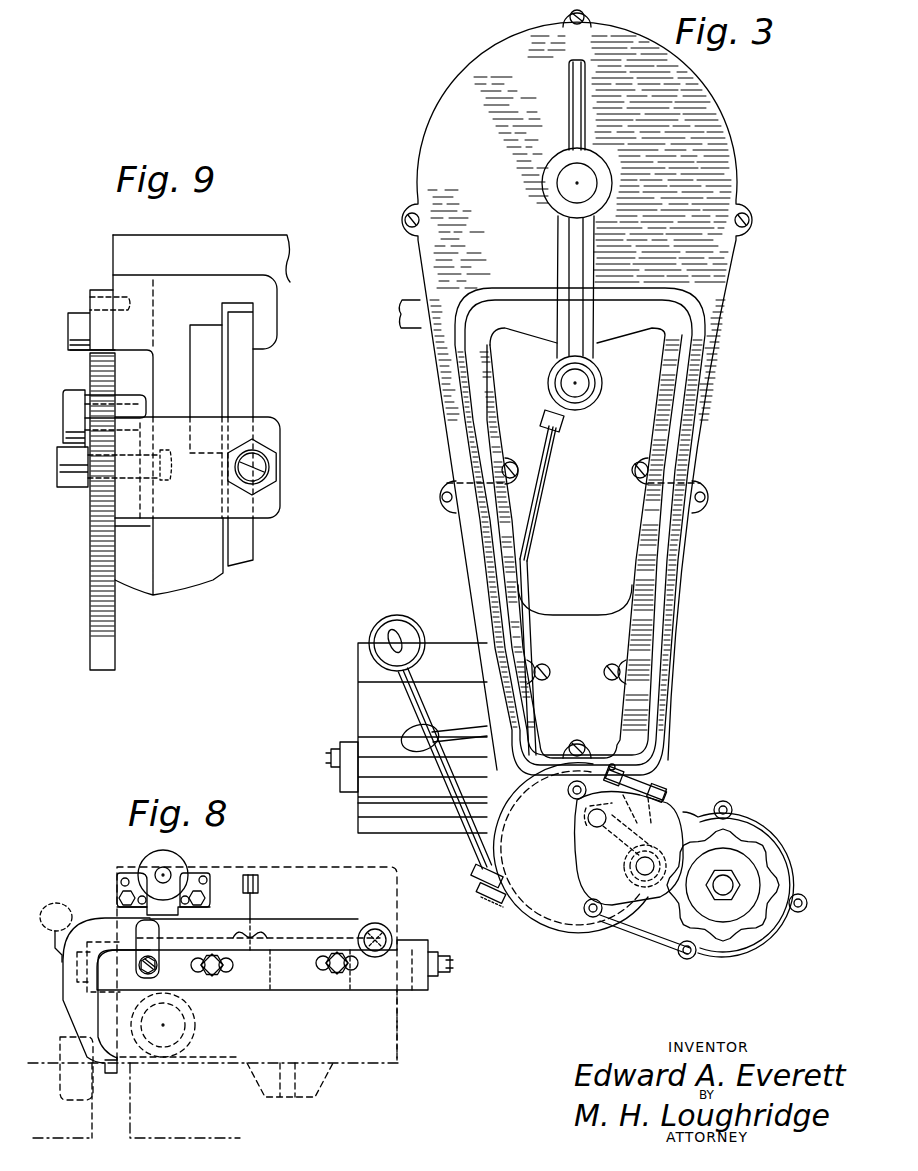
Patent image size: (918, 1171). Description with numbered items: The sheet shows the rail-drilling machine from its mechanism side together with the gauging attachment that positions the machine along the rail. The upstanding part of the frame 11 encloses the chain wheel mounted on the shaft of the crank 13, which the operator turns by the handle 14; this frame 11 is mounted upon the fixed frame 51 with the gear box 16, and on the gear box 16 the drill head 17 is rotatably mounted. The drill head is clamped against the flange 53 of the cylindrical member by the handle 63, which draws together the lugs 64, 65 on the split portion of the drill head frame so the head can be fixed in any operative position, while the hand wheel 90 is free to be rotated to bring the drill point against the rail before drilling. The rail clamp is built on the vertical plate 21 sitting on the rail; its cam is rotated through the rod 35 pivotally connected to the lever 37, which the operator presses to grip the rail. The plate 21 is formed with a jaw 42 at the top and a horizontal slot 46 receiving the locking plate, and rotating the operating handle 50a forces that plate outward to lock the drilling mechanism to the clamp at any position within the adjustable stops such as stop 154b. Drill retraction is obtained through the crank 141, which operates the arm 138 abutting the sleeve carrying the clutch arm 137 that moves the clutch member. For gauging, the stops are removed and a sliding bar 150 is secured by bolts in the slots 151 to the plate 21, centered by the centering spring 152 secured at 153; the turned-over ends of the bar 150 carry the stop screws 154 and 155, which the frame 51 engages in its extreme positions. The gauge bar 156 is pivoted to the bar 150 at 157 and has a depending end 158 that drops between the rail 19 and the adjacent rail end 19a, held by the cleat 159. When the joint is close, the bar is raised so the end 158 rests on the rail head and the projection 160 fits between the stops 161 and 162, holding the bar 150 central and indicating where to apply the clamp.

In FIG. 3, the upstanding part of the frame 11 is at (647, 140).
In FIG. 3, the crank 13 is at (558, 246).
In FIG. 3, the handle 14 is at (603, 385).
In FIG. 3, the rod 35 is at (542, 470).
In FIG. 3, the lever 37 is at (410, 322).
In FIG. 3, the vertical plate 21 is at (447, 656).
In FIG. 9, the vertical plate 21 is at (169, 556).
In FIG. 8, the vertical plate 21 is at (257, 963).
In FIG. 3, the horizontal slot 46 is at (381, 732).
In FIG. 9, the horizontal slot 46 is at (190, 350).
In FIG. 3, the operating handle 50a is at (466, 725).
In FIG. 3, the adjustable stop 154b is at (338, 757).
In FIG. 3, the flange 53 is at (362, 806).
In FIG. 3, the handle 63 is at (470, 845).
In FIG. 3, the lug 64 is at (474, 880).
In FIG. 3, the lug 65 is at (480, 898).
In FIG. 3, the gear box 16 is at (554, 931).
In FIG. 3, the clutch arm 137 is at (620, 853).
In FIG. 3, the arm 138 is at (630, 829).
In FIG. 3, the crank 141 is at (640, 780).
In FIG. 3, the hand wheel 90 is at (726, 928).
In FIG. 3, the drill head 17 is at (737, 945).
In FIG. 9, the stop 161 is at (90, 308).
In FIG. 8, the stop 161 is at (203, 878).
In FIG. 9, the jaw 42 is at (276, 344).
In FIG. 9, the pivot 157 is at (63, 425).
In FIG. 8, the pivot 157 is at (380, 918).
In FIG. 9, the stop screw 154 is at (272, 472).
In FIG. 8, the stop screw 154 is at (432, 980).
In FIG. 9, the sliding bar 150 is at (197, 467).
In FIG. 8, the sliding bar 150 is at (228, 1018).
In FIG. 9, the gauge bar 156 is at (90, 522).
In FIG. 8, the gauge bar 156 is at (308, 920).
In FIG. 9, the fixed frame 51 is at (250, 540).
In FIG. 9, the depending end 158 is at (115, 658).
In FIG. 8, the depending end 158 is at (113, 1078).
In FIG. 8, the stop 162 is at (130, 878).
In FIG. 8, the securing point 153 is at (258, 884).
In FIG. 8, the centering spring 152 is at (251, 906).
In FIG. 8, the stop screw 155 is at (79, 1001).
In FIG. 8, the projection 160 is at (170, 920).
In FIG. 8, the cleat 159 is at (156, 973).
In FIG. 8, the slot 151 is at (228, 975).
In FIG. 8, the rail end 19a is at (92, 1127).
In FIG. 8, the rail 19 is at (130, 1127).